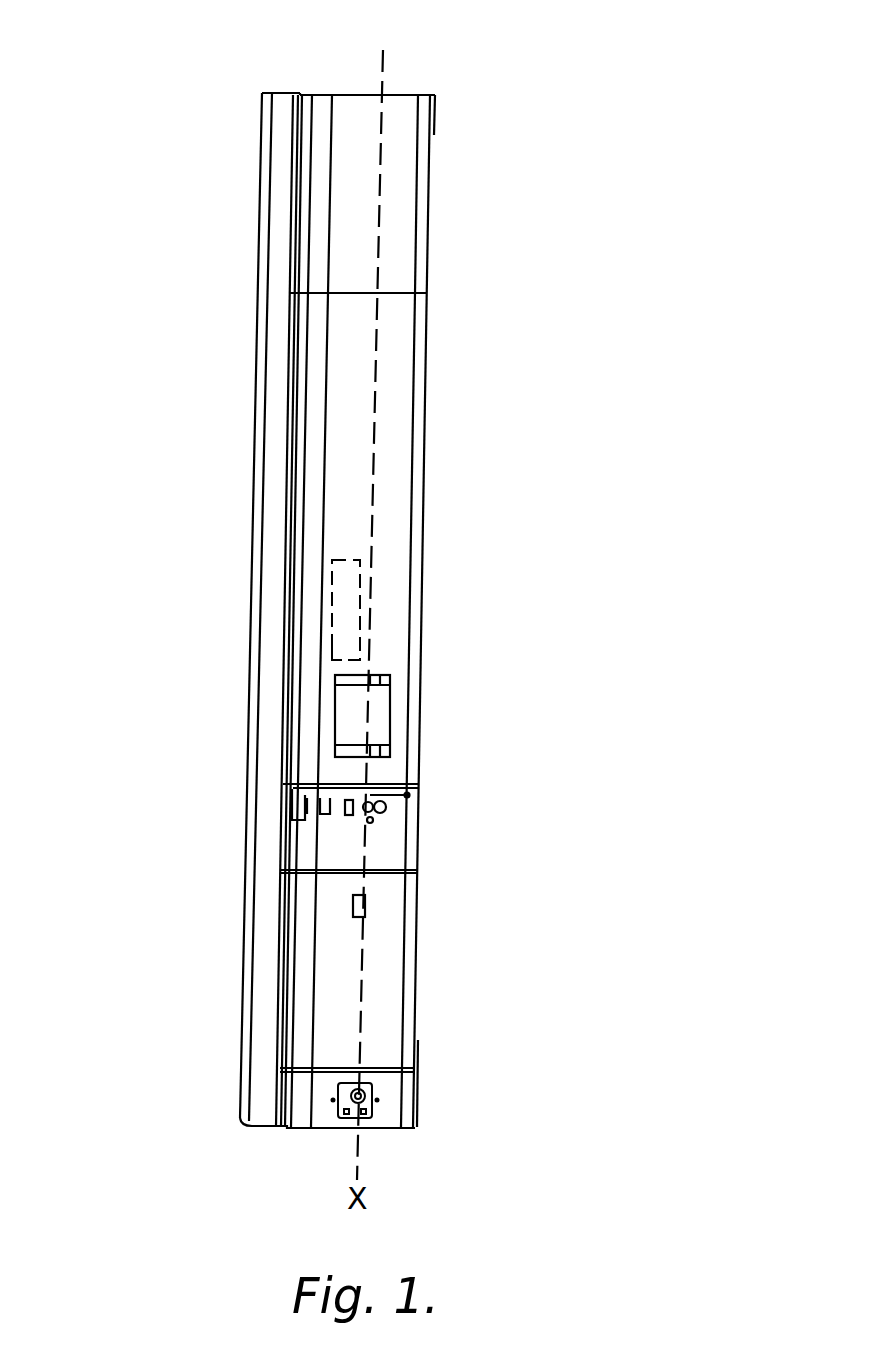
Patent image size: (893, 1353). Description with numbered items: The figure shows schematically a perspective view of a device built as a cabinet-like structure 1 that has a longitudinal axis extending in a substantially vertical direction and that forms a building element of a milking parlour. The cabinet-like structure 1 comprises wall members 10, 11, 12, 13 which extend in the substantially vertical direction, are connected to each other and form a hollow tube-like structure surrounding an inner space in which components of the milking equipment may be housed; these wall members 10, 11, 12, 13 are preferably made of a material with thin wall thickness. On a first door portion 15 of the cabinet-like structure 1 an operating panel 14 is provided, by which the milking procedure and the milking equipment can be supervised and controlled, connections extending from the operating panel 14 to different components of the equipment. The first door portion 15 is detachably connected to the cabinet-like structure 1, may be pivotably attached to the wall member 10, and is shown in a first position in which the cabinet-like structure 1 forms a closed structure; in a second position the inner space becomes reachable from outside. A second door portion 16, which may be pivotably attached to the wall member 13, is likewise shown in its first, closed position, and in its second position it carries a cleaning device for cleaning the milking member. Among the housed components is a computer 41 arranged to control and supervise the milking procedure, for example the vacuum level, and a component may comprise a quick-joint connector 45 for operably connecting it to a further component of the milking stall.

The cabinet-like structure 1 is at (213, 160).
The wall member 10 is at (270, 504).
The wall member 11 is at (405, 217).
The wall member 12 is at (397, 827).
The wall member 13 is at (387, 1097).
The operating panel 14 is at (380, 710).
The first door portion 15 is at (395, 555).
The second door portion 16 is at (390, 957).
The computer 41 is at (333, 627).
The quick-joint connector 45 is at (347, 1103).